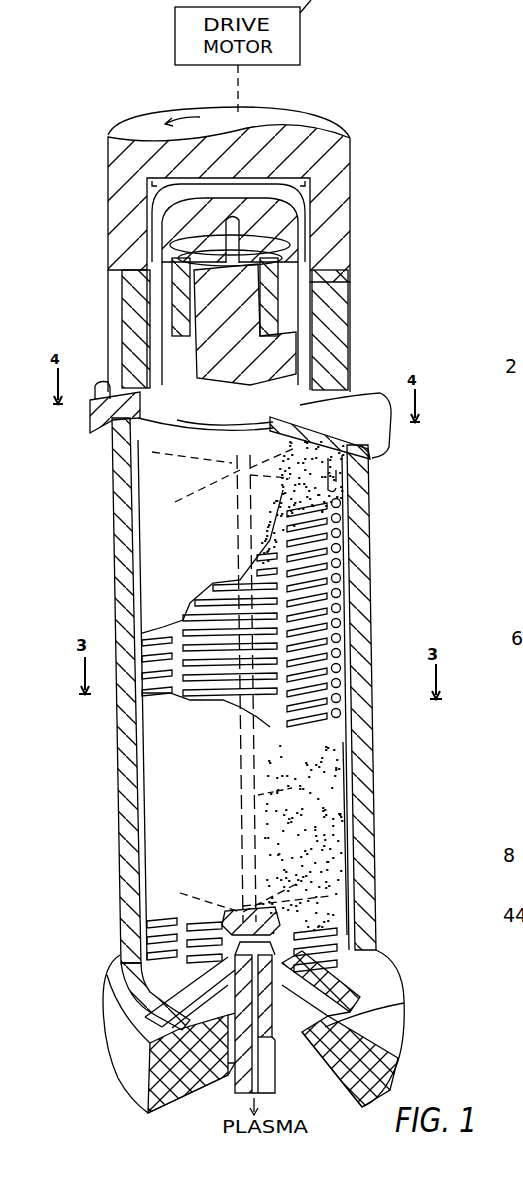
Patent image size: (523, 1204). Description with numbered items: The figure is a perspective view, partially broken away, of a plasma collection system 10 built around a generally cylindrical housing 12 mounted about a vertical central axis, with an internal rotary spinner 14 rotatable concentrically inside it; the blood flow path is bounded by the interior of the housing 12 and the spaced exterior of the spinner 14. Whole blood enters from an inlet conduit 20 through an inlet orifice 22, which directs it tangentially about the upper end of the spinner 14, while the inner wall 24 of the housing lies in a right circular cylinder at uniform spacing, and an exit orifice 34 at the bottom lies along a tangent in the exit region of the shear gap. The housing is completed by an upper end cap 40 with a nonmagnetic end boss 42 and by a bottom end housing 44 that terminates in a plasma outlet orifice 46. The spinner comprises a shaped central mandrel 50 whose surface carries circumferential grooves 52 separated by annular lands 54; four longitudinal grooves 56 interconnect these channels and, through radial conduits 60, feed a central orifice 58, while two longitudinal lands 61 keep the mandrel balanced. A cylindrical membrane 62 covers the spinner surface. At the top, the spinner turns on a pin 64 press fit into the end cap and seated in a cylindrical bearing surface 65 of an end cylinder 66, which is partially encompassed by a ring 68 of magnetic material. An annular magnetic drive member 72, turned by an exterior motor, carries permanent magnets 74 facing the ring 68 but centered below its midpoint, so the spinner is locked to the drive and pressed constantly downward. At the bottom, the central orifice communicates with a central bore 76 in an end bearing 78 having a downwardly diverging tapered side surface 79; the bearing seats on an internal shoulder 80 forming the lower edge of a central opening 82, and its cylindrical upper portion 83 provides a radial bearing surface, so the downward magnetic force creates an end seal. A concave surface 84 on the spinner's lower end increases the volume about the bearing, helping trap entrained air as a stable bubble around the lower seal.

The system 10 is at (95, 539).
The cylindrical housing 12 is at (360, 623).
The rotary spinner 14 is at (329, 763).
The inlet conduit 20 is at (106, 385).
The inlet orifice 22 is at (122, 457).
The inner wall 24 is at (343, 683).
The exit orifice 34 is at (333, 963).
The upper end cap 40 is at (360, 403).
The end boss 42 is at (297, 235).
The bottom end housing 44 is at (383, 1042).
The plasma outlet orifice 46 is at (275, 1073).
The central mandrel 50 is at (338, 653).
The circumferential grooves 52 is at (340, 600).
The annular lands 54 is at (342, 547).
The longitudinal grooves 56 is at (340, 523).
The central orifice 58 is at (347, 775).
The radial conduits 60 is at (372, 470).
The longitudinal lands 61 is at (275, 771).
The cylindrical membrane 62 is at (327, 833).
The pin 64 is at (303, 212).
The cylindrical bearing surface 65 is at (190, 280).
The end cylinder 66 is at (303, 347).
The ring 68 is at (283, 285).
The annular magnetic drive member 72 is at (352, 140).
The permanent magnets 74 is at (132, 332).
The central bore 76 is at (226, 1085).
The end bearing 78 is at (150, 1097).
The tapered side surface 79 is at (238, 1008).
The internal shoulder 80 is at (347, 1040).
The central opening 82 is at (360, 1003).
The cylindrical upper portion 83 is at (233, 944).
The concave surface 84 is at (322, 1092).